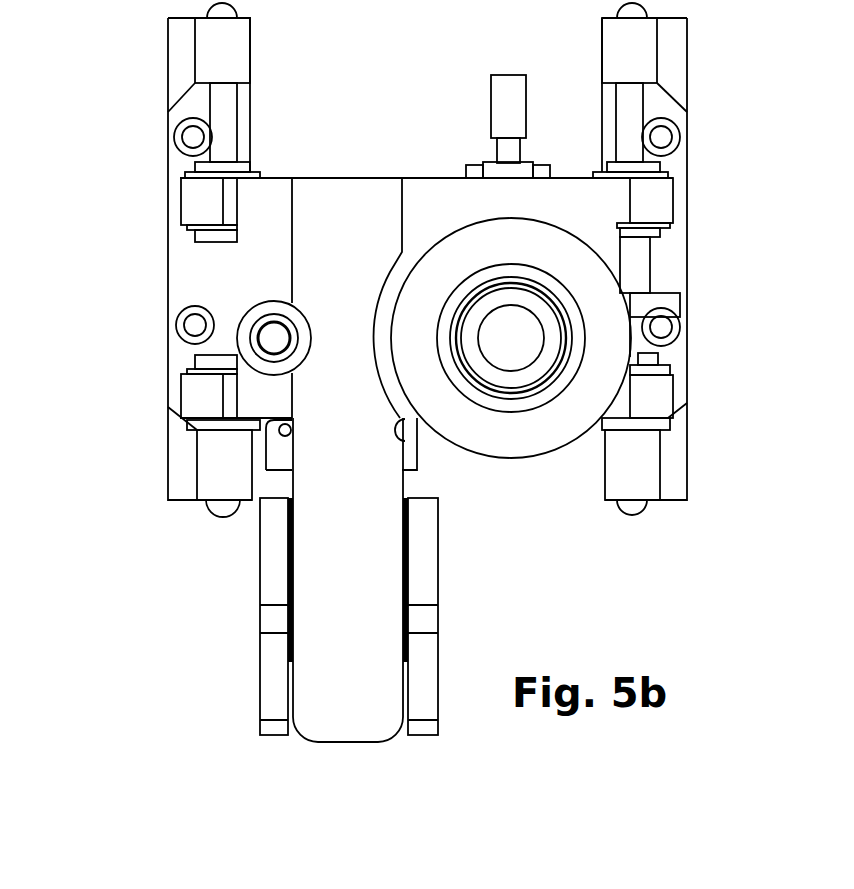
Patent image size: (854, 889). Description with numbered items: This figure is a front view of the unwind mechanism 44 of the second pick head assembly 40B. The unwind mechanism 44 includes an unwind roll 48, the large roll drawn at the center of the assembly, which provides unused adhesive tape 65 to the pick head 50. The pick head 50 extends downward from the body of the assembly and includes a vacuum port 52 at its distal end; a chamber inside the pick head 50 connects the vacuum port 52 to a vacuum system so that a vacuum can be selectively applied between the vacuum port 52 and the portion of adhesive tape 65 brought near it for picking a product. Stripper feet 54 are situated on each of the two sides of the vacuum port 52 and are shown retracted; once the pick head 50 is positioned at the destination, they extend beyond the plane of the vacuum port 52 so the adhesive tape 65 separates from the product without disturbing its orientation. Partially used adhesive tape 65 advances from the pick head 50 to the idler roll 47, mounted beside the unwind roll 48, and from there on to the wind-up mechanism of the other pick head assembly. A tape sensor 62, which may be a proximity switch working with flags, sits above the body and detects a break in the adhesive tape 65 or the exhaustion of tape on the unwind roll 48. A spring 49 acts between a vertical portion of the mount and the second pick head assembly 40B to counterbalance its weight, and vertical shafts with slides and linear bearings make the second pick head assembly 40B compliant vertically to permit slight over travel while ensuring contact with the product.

The second pick head assembly 40B is at (116, 134).
The tape sensor 62 is at (505, 74).
The adhesive tape 65 is at (466, 222).
The spring 49 is at (652, 267).
The idler roll 47 is at (260, 300).
The unwind mechanism 44 is at (468, 515).
The unwind roll 48 is at (502, 460).
The stripper feet 54 is at (263, 687).
The pick head 50 is at (372, 705).
The vacuum port 52 is at (346, 744).